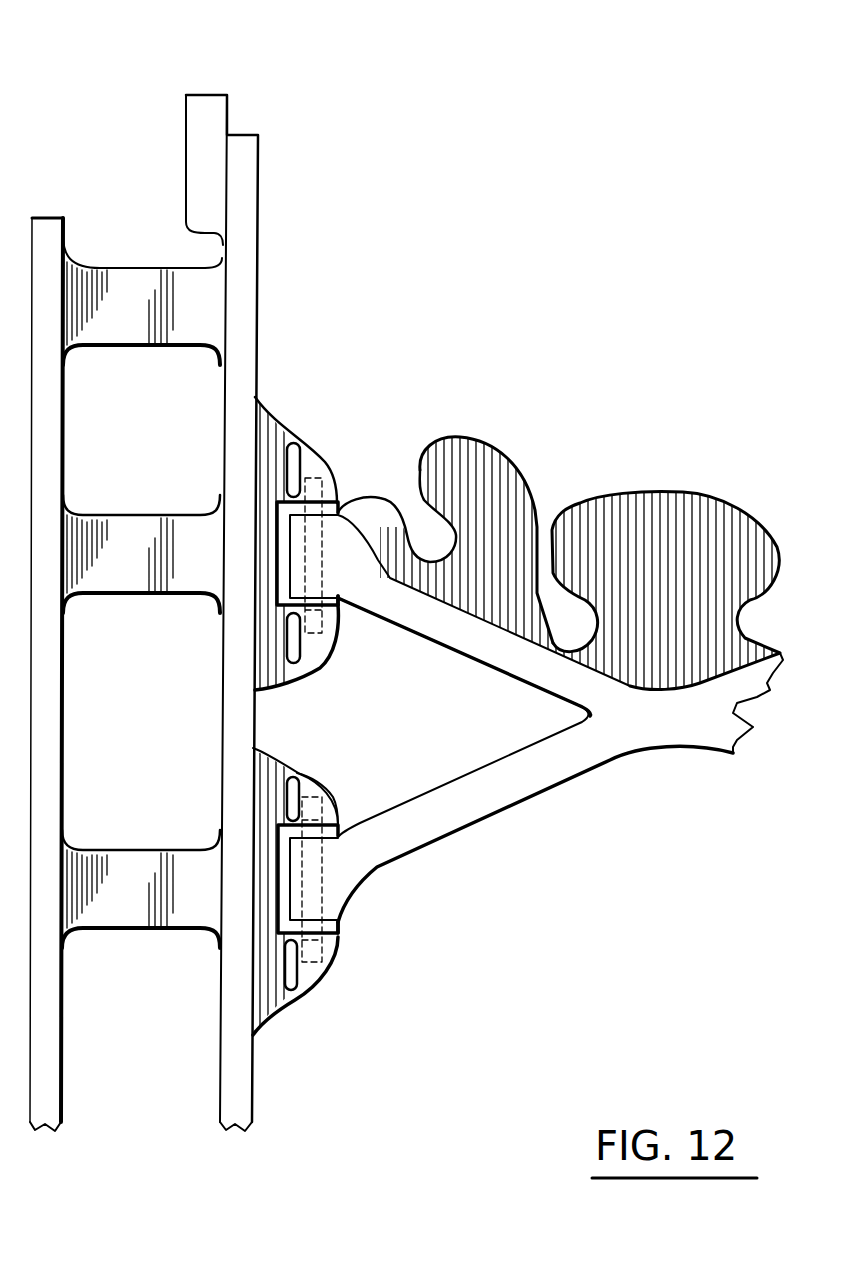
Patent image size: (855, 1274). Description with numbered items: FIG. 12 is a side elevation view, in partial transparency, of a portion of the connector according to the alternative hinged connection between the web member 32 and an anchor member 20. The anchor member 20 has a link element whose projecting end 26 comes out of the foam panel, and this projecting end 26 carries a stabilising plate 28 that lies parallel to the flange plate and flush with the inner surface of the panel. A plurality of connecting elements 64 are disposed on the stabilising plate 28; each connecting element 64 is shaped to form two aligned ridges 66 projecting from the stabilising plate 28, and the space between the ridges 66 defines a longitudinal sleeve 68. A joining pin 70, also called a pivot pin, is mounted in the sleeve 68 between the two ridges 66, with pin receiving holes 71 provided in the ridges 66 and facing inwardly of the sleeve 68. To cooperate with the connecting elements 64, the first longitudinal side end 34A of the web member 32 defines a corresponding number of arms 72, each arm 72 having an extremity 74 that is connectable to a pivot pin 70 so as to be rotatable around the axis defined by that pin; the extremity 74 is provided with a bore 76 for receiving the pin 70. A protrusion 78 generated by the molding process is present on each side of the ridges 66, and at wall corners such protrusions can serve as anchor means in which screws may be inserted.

The anchor member 20 is at (117, 168).
The projecting end 26 is at (276, 271).
The stabilising plate 28 is at (243, 198).
The web member 32 is at (705, 517).
The first longitudinal side end 34A is at (560, 655).
The connecting element 64 is at (314, 693).
The ridge 66 is at (275, 428).
The longitudinal sleeve 68 is at (340, 605).
The joining pin 70 is at (340, 507).
The pin receiving hole 71 is at (317, 477).
The arm 72 is at (483, 640).
The extremity 74 is at (355, 573).
The bore 76 is at (303, 563).
The protrusion 78 is at (294, 443).